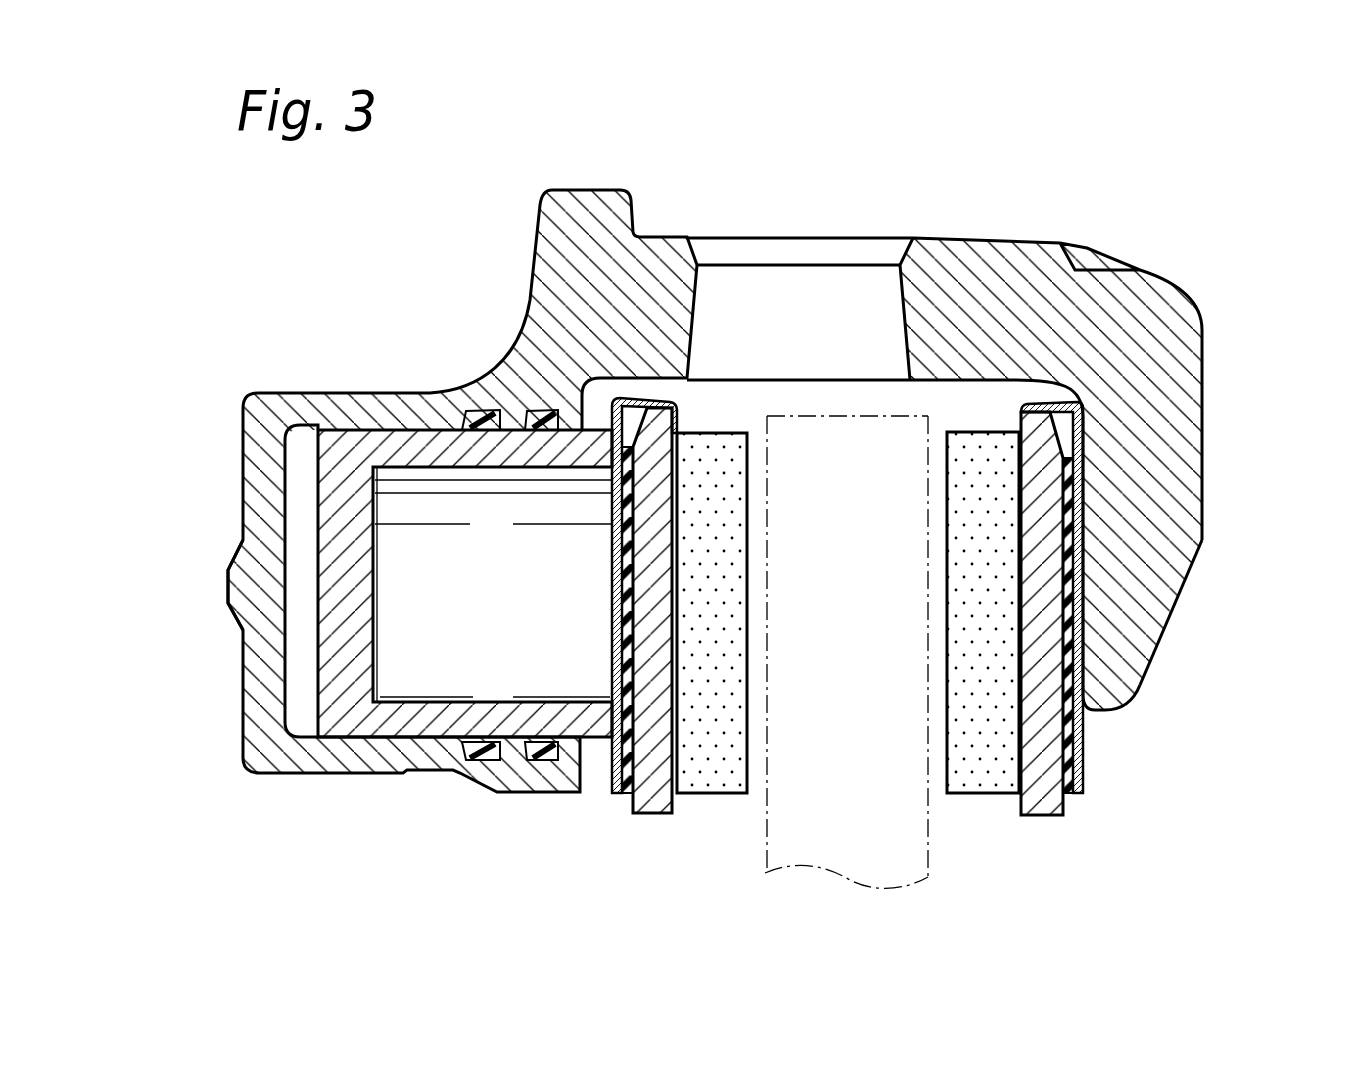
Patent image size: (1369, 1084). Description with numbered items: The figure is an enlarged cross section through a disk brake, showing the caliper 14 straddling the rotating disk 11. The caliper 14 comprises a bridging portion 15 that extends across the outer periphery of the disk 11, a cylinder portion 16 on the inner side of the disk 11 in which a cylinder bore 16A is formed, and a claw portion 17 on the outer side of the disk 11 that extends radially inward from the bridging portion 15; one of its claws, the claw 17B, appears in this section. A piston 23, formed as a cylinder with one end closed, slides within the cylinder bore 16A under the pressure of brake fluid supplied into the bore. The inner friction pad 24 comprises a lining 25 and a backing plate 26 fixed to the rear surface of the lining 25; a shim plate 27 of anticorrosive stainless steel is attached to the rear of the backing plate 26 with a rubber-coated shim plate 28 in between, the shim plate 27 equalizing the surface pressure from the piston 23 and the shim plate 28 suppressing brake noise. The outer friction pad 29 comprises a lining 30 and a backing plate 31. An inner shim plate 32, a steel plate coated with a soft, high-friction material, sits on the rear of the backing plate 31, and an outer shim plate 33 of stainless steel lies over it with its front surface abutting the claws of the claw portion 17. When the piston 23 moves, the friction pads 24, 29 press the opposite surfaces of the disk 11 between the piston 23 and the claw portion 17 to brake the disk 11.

The disk 11 is at (847, 855).
The caliper 14 is at (583, 190).
The bridging portion 15 is at (985, 262).
The cylinder portion 16 is at (374, 400).
The cylinder bore 16A is at (292, 503).
The claw portion 17 is at (1188, 415).
The claw 17B is at (1155, 612).
The piston 23 is at (441, 722).
The friction pad 24 is at (647, 670).
The lining 25 is at (712, 792).
The backing plate 26 is at (648, 806).
The shim plate 27 is at (612, 795).
The shim plate 28 is at (627, 795).
The friction pad 29 is at (1069, 672).
The lining 30 is at (973, 775).
The backing plate 31 is at (1038, 802).
The inner shim plate 32 is at (1068, 795).
The outer shim plate 33 is at (1085, 750).